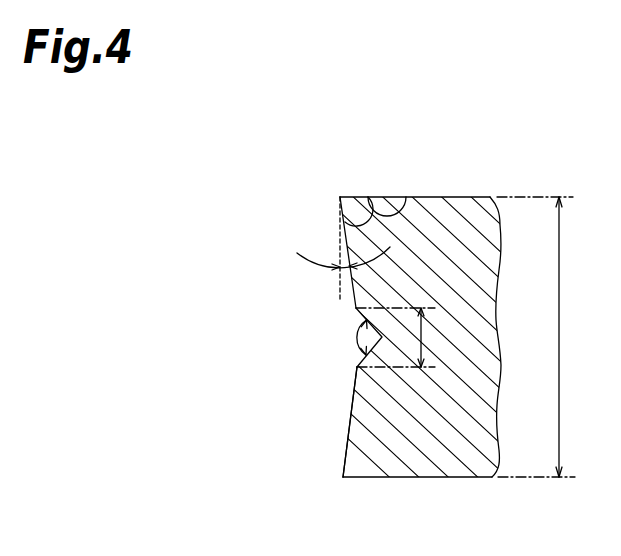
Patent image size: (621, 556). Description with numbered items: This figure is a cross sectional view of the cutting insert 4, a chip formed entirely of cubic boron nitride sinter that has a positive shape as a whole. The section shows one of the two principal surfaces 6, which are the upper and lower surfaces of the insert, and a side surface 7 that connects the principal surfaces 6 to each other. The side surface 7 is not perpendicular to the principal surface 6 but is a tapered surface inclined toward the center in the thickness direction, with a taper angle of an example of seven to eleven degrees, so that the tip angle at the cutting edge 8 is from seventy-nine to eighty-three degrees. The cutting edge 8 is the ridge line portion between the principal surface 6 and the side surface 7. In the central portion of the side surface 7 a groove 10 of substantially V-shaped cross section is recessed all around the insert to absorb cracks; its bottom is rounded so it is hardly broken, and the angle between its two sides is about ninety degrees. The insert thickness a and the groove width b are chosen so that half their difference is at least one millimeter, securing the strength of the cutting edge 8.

The cutting insert 4 is at (342, 92).
The principal surface 6 is at (458, 197).
The side surface 7 is at (350, 427).
The cutting edge 8 is at (340, 197).
The groove 10 is at (356, 366).
The insert thickness a is at (540, 337).
The width of the groove b is at (431, 337).